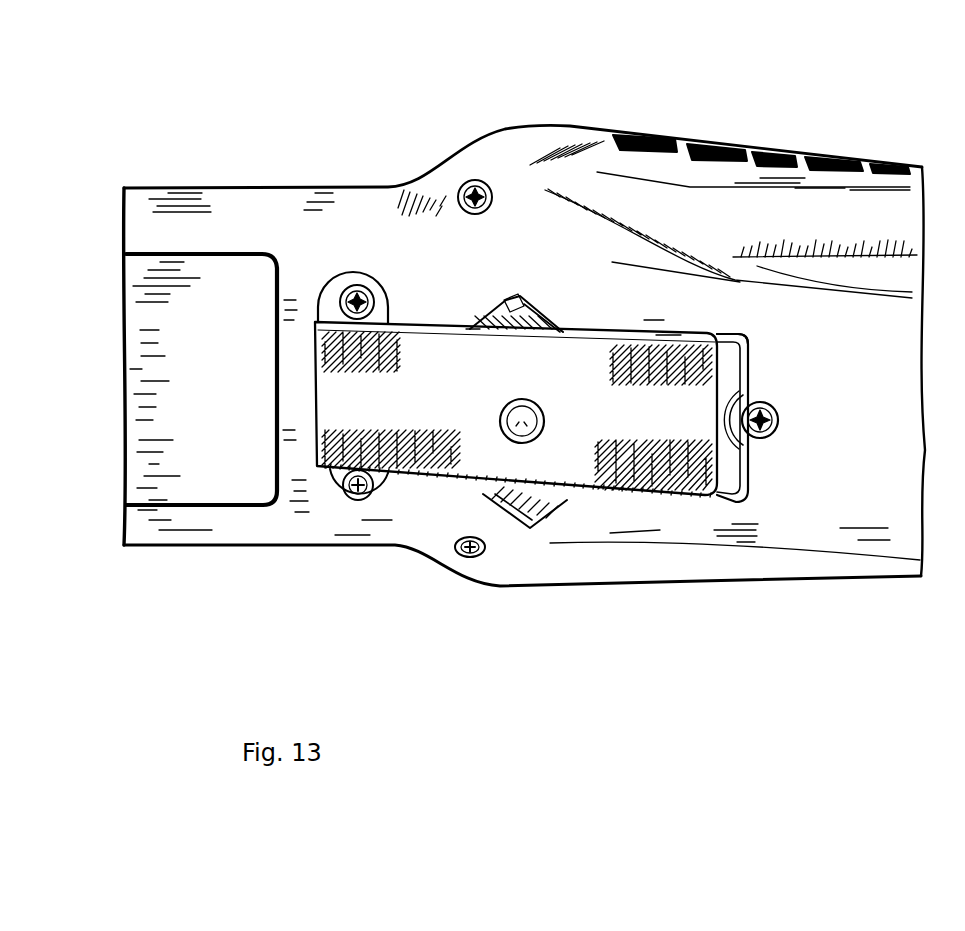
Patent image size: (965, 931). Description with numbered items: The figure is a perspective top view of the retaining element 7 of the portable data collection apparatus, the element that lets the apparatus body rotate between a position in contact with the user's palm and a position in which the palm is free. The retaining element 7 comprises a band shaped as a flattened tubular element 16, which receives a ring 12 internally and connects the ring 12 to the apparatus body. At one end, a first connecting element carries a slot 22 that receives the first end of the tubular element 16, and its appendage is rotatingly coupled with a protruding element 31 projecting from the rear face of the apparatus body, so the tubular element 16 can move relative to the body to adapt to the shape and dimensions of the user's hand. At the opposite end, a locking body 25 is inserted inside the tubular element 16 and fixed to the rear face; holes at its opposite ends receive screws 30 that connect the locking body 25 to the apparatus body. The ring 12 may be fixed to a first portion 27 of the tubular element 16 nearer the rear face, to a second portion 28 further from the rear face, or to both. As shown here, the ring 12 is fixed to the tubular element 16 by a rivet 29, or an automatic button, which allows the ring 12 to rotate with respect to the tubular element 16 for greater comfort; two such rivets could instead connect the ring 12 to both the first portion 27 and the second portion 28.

The retaining element 7 is at (667, 528).
The ring 12 is at (512, 302).
The tubular element 16 is at (714, 333).
The slot 22 is at (748, 352).
The locking body 25 is at (368, 283).
The first portion 27 is at (650, 393).
The second portion 28 is at (478, 462).
The rivet 29 is at (527, 413).
The screws 30 is at (357, 288).
The protruding element 31 is at (780, 418).